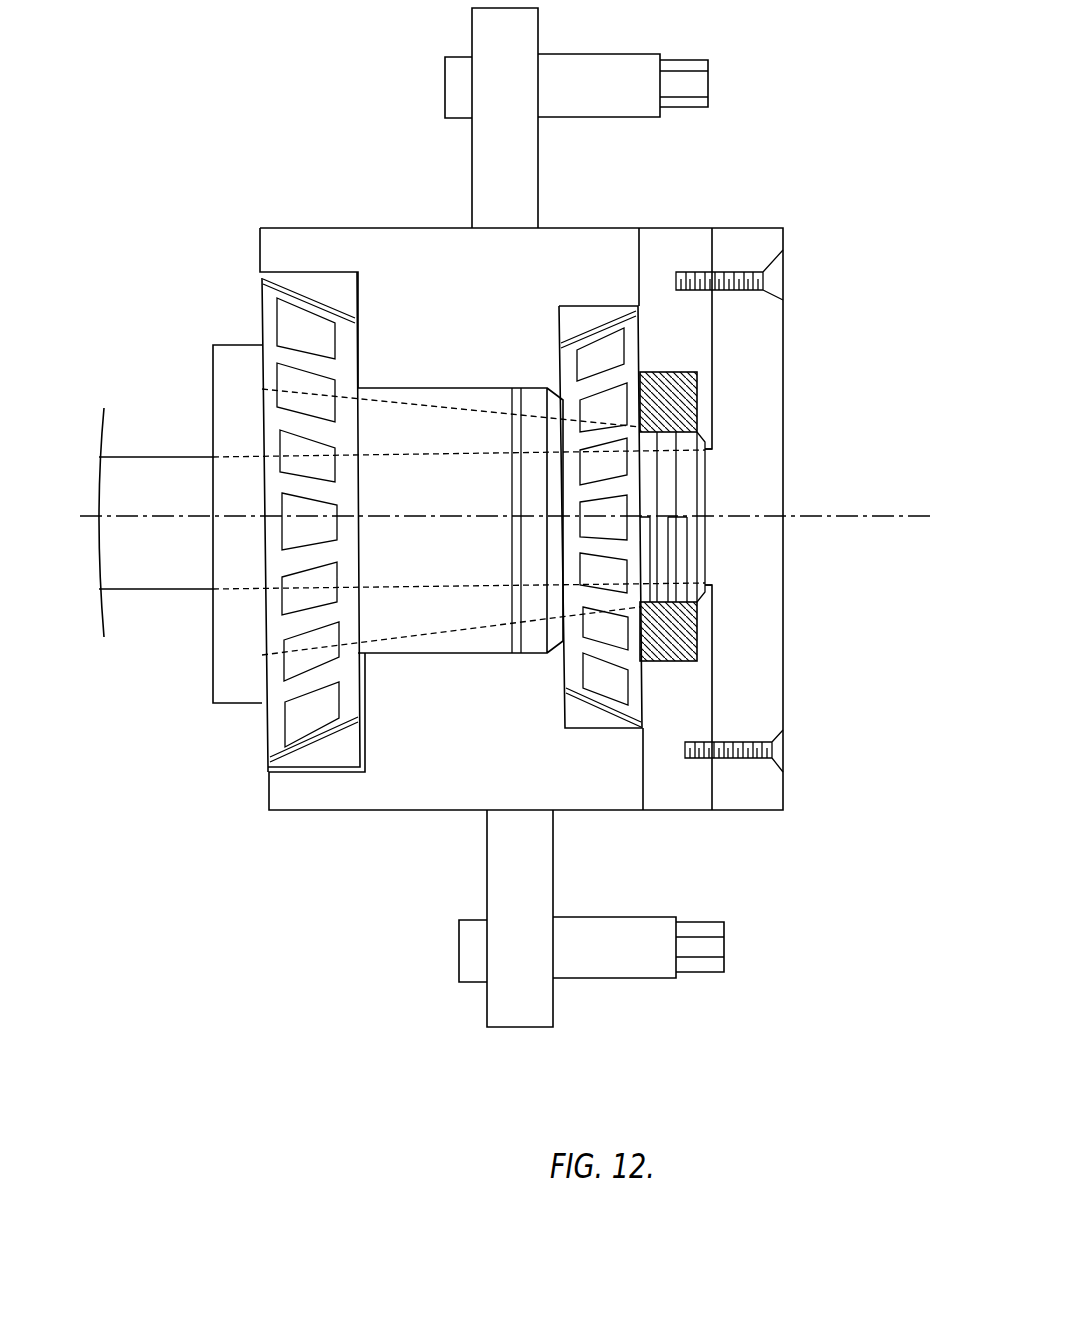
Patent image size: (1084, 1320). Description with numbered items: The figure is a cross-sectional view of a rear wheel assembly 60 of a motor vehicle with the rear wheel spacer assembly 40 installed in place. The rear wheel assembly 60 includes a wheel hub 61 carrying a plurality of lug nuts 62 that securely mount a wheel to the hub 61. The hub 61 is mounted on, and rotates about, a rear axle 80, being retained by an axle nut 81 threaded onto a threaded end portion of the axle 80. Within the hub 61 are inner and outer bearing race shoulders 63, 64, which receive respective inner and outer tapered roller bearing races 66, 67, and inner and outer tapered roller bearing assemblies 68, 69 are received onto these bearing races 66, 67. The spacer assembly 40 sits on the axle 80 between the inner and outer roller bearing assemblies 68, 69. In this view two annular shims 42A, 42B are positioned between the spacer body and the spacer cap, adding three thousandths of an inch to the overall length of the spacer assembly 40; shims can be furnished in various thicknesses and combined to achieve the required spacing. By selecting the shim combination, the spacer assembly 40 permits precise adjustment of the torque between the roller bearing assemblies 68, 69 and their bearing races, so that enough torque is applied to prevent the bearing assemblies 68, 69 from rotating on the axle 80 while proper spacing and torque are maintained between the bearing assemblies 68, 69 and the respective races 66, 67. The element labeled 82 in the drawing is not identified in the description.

The rear wheel spacer assembly 40 is at (487, 405).
The annular shim 42A is at (512, 627).
The annular shim 42B is at (519, 648).
The rear wheel assembly 60 is at (869, 224).
The wheel hub 61 is at (498, 185).
The lug nuts 62 is at (648, 108).
The inner bearing race shoulder 63 is at (297, 278).
The outer bearing race shoulder 64 is at (585, 303).
The inner tapered roller bearing race 66 is at (342, 283).
The outer tapered roller bearing race 67 is at (598, 313).
The inner tapered roller bearing assembly 68 is at (280, 355).
The outer tapered roller bearing assembly 69 is at (640, 347).
The rear axle 80 is at (176, 488).
The axle nut 81 is at (690, 637).
The coil 82 is at (688, 557).